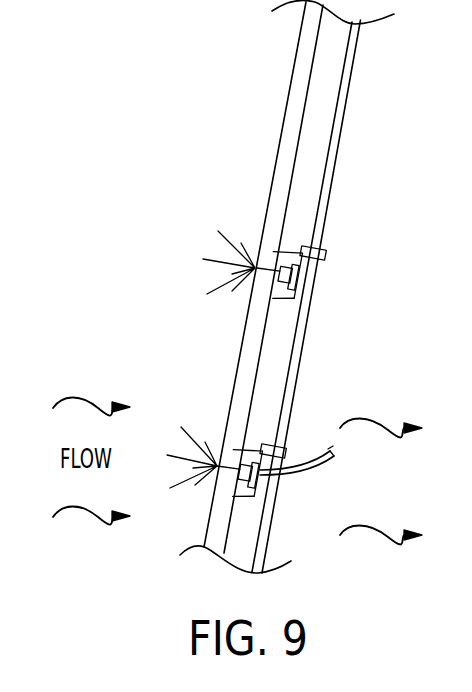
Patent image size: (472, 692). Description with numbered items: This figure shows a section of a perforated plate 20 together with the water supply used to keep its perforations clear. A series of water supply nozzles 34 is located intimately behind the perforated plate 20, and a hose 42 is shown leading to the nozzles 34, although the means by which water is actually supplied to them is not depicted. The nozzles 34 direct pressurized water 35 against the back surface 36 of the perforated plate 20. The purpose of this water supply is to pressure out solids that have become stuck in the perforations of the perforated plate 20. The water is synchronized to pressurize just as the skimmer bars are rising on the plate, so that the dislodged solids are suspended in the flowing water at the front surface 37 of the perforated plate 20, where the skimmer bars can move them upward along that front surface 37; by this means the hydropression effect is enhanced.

The perforated plate 20 is at (296, 286).
The water supply nozzle 34 is at (287, 291).
The pressurized water 35 is at (217, 250).
The back surface 36 is at (324, 131).
The front surface 37 is at (268, 130).
The hose 42 is at (331, 459).